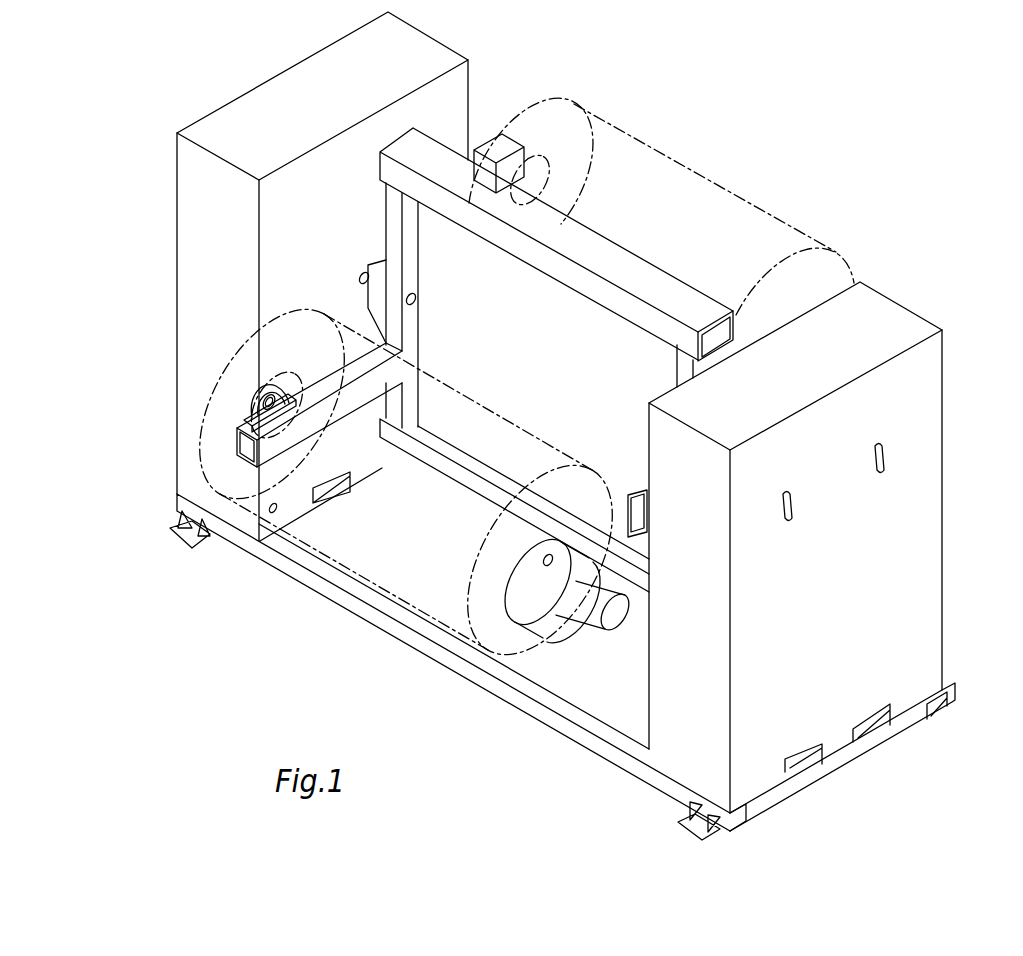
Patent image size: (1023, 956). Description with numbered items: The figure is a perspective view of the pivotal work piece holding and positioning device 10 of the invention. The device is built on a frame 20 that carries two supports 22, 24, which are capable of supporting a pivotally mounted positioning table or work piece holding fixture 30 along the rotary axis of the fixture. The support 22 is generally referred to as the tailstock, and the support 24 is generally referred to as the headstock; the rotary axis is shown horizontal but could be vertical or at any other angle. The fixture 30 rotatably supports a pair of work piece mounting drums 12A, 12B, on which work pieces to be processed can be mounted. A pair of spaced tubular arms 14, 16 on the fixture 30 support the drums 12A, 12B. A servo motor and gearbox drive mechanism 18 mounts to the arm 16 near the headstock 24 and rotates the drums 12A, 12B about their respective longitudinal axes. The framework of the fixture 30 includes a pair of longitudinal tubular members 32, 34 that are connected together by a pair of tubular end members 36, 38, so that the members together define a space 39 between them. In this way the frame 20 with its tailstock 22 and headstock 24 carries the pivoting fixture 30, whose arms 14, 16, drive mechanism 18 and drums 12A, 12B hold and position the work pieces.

The positioning device 10 is at (186, 68).
The work piece mounting drum 12A is at (347, 545).
The work piece mounting drum 12B is at (736, 230).
The tubular arm 14 is at (500, 150).
The tubular arm 16 is at (640, 500).
The servo motor and gearbox drive mechanism 18 is at (565, 630).
The frame 20 is at (562, 750).
The support (tailstock) 22 is at (180, 302).
The support (headstock) 24 is at (920, 572).
The work piece holding fixture 30 is at (587, 217).
The longitudinal tubular member 32 is at (612, 256).
The longitudinal tubular member 34 is at (472, 498).
The tubular end member 36 is at (398, 199).
The tubular end member 38 is at (684, 366).
The space 39 is at (458, 288).